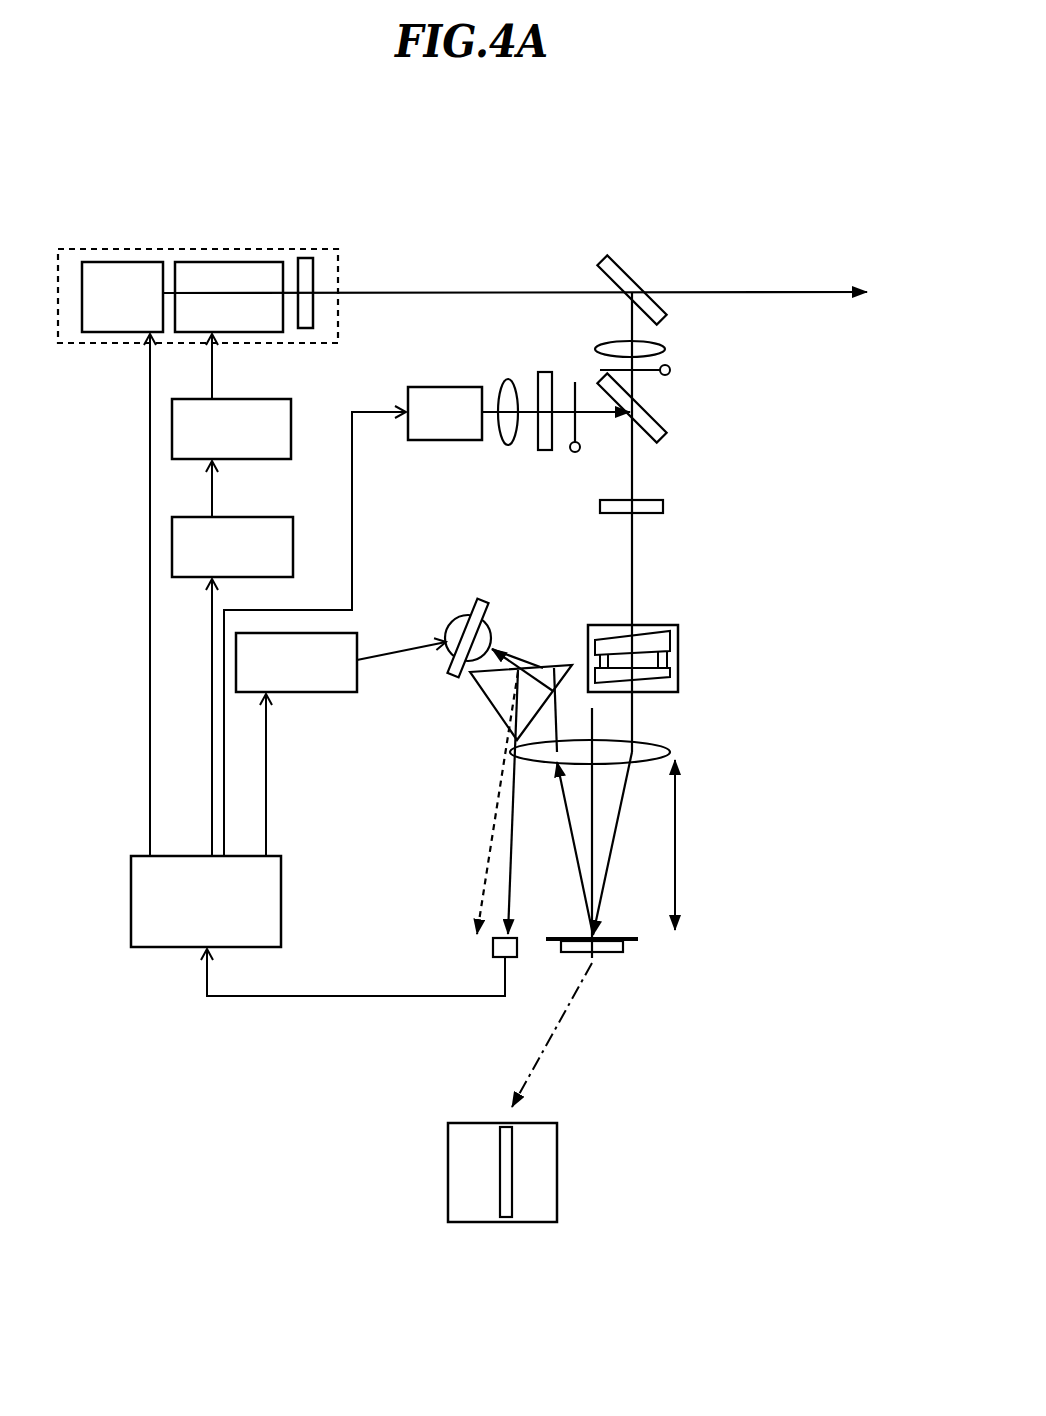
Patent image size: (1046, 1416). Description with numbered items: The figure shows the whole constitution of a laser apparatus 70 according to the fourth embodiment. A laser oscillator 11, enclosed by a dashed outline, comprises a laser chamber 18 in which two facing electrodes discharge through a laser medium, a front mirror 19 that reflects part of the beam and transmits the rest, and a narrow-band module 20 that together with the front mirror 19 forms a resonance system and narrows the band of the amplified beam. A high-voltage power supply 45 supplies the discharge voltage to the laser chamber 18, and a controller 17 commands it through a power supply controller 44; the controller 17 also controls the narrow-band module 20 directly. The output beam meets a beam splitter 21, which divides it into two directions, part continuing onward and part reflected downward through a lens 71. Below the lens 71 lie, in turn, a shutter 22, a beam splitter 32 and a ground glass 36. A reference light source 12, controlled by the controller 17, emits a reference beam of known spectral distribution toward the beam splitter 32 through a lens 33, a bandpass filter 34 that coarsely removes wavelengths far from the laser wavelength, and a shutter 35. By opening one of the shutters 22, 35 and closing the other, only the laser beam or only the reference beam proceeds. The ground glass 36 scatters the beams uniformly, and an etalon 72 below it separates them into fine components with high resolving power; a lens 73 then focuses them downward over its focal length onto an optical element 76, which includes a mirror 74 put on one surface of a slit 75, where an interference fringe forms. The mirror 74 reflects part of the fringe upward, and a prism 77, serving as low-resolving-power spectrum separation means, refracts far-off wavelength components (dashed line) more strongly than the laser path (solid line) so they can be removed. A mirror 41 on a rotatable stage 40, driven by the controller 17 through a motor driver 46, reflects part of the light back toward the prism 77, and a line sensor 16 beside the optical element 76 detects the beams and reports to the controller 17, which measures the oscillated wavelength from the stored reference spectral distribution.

The laser apparatus 70 is at (466, 162).
The laser oscillator 11 is at (190, 249).
The narrow-band module 20 is at (116, 262).
The laser chamber 18 is at (240, 262).
The front mirror 19 is at (306, 258).
The beam splitter 21 is at (640, 270).
The lens 71 is at (610, 340).
The shutter 22 is at (671, 370).
The beam splitter 32 is at (662, 422).
The ground glass 36 is at (663, 507).
The reference light source 12 is at (440, 440).
The lens 33 is at (507, 445).
The bandpass filter 34 is at (545, 450).
The shutter 35 is at (575, 452).
The high-voltage power supply 45 is at (172, 438).
The power supply controller 44 is at (172, 550).
The motor driver 46 is at (322, 692).
The rotatable stage 40 is at (452, 622).
The mirror 41 is at (485, 604).
The prism 77 is at (500, 706).
The etalon 72 is at (678, 640).
The lens 73 is at (655, 746).
The controller 17 is at (131, 910).
The line sensor 16 is at (517, 948).
The mirror 74 is at (566, 1079).
The slit 75 is at (633, 942).
The optical element 76 is at (569, 1080).